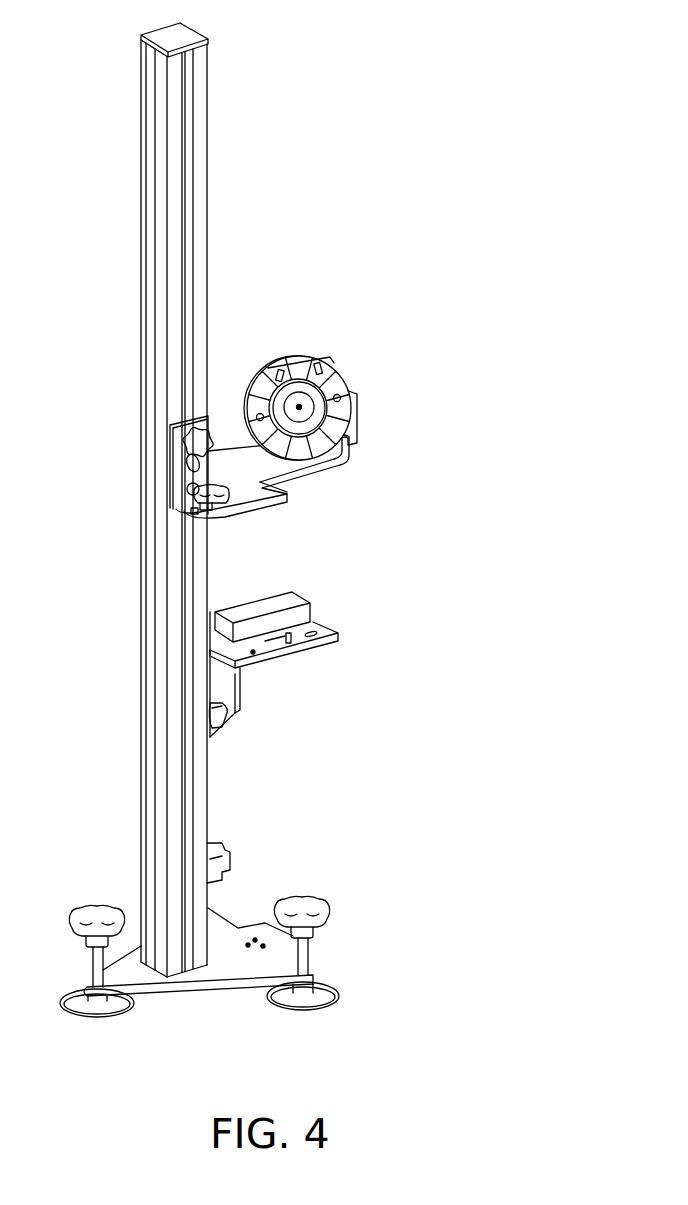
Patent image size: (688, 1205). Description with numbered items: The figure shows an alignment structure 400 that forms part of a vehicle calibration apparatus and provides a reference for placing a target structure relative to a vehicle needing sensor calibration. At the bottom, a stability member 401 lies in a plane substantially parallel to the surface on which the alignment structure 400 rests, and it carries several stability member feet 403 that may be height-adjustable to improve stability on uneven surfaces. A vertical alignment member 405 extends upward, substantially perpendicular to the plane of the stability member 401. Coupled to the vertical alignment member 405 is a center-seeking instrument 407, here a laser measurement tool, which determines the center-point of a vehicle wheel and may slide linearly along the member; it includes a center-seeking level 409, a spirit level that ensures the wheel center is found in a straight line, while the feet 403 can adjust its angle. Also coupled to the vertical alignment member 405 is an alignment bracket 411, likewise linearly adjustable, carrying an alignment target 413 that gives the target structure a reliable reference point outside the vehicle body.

The alignment structure 400 is at (450, 108).
The stability member 401 is at (199, 990).
The stability member feet 403 is at (97, 905).
The vertical alignment member 405 is at (140, 270).
The center-seeking instrument 407 is at (258, 597).
The center-seeking level 409 is at (332, 624).
The alignment bracket 411 is at (290, 503).
The alignment target 413 is at (296, 357).